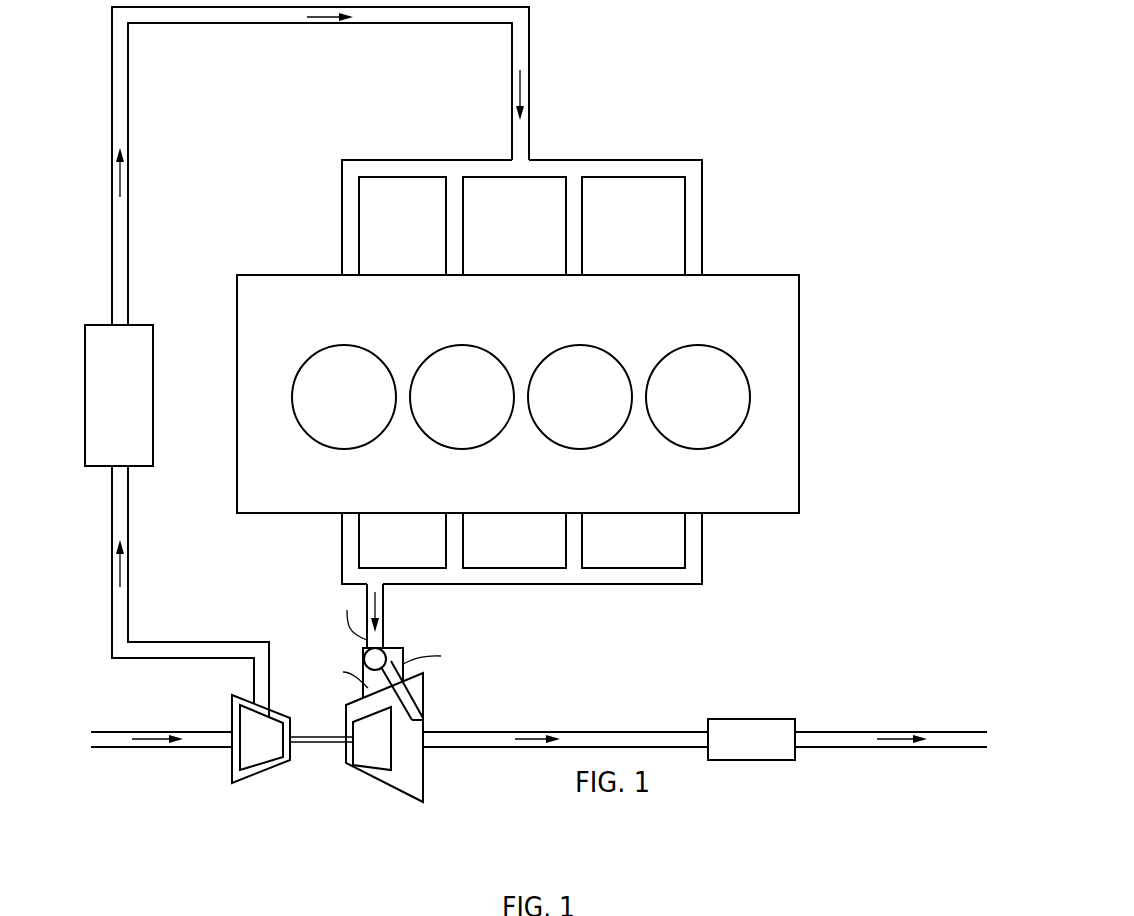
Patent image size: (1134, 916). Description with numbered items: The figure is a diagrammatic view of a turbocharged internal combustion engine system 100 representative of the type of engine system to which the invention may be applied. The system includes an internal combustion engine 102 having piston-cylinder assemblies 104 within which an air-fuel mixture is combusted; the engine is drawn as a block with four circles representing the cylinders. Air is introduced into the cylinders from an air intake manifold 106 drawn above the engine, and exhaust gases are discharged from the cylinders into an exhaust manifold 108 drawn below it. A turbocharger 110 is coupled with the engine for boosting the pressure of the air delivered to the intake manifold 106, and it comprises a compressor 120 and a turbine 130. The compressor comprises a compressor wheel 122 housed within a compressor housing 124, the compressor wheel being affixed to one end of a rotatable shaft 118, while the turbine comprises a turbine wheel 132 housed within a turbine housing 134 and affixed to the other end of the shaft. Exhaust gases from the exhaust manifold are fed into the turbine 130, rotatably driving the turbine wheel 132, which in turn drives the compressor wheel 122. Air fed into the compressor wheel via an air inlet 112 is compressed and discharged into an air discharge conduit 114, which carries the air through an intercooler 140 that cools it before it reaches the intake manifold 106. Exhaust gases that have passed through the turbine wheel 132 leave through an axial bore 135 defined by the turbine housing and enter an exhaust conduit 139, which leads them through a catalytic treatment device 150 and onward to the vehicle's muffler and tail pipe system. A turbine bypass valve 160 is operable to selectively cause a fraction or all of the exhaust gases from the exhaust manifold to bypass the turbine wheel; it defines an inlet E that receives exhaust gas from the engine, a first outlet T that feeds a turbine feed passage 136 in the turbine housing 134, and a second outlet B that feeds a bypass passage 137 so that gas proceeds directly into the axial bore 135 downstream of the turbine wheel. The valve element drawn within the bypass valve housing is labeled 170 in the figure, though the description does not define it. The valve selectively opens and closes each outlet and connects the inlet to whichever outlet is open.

The turbocharged internal combustion engine system 100 is at (795, 188).
The internal combustion engine 102 is at (787, 318).
The piston-cylinder assemblies 104 is at (436, 360).
The air intake manifold 106 is at (433, 170).
The exhaust manifold 108 is at (665, 578).
The turbocharger 110 is at (308, 653).
The air inlet 112 is at (115, 732).
The air discharge conduit 114 is at (210, 642).
The rotatable shaft 118 is at (310, 737).
The compressor 120 is at (241, 766).
The compressor wheel 122 is at (241, 762).
The compressor housing 124 is at (272, 770).
The turbine 130 is at (376, 770).
The turbine wheel 132 is at (372, 760).
The turbine housing 134 is at (398, 778).
The axial bore 135 is at (417, 748).
The turbine feed passage 136 is at (378, 733).
The bypass passage 137 is at (423, 712).
The exhaust conduit 139 is at (631, 737).
The intercooler 140 is at (143, 395).
The catalytic treatment device 150 is at (722, 719).
The turbine bypass valve 160 is at (408, 645).
The bypass valve 170 is at (388, 645).